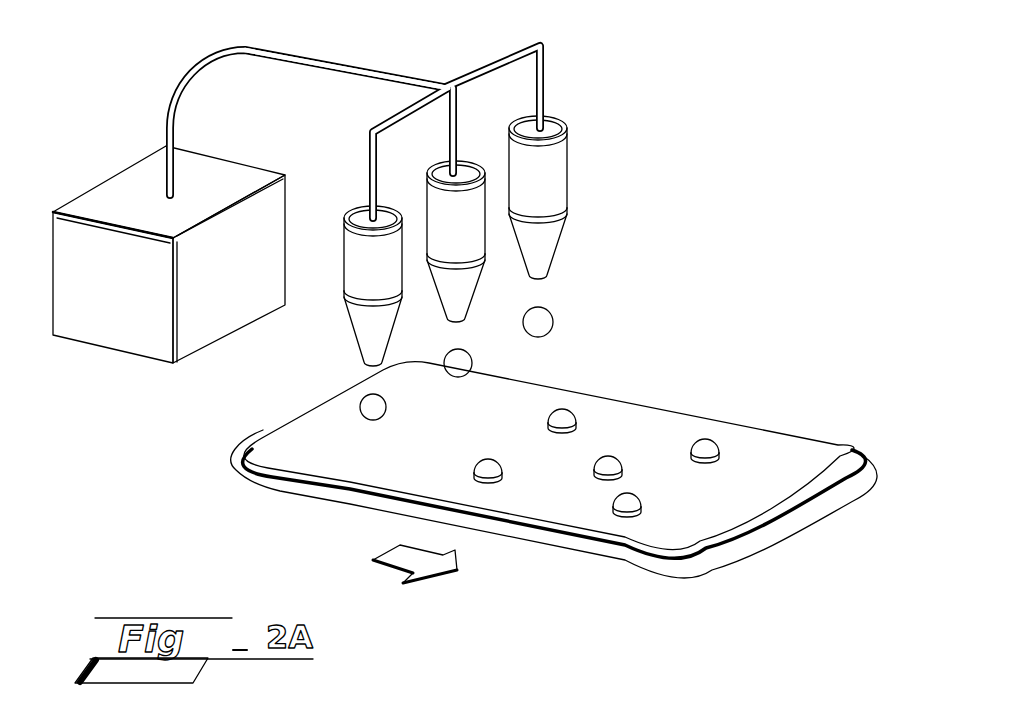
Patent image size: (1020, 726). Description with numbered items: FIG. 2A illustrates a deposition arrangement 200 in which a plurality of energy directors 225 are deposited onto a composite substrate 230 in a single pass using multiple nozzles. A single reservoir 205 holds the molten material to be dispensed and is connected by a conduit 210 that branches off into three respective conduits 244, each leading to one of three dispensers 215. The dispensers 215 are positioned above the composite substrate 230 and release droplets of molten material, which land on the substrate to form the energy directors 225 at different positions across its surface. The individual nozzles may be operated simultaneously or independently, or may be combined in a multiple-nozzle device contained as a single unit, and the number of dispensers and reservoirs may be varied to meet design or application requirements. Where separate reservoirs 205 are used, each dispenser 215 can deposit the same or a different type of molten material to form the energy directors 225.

The dispensing system 200 is at (778, 160).
The reservoir 205 is at (103, 335).
The conduit 210 is at (188, 70).
The dispenser 215 is at (344, 266).
The energy director 225 is at (487, 463).
The composite substrate 230 is at (298, 445).
The respective conduit 244 is at (368, 155).